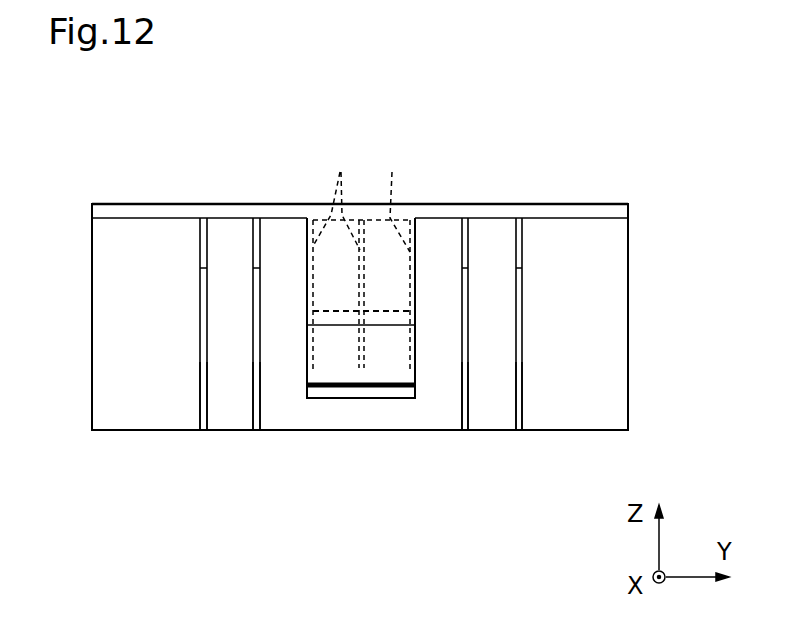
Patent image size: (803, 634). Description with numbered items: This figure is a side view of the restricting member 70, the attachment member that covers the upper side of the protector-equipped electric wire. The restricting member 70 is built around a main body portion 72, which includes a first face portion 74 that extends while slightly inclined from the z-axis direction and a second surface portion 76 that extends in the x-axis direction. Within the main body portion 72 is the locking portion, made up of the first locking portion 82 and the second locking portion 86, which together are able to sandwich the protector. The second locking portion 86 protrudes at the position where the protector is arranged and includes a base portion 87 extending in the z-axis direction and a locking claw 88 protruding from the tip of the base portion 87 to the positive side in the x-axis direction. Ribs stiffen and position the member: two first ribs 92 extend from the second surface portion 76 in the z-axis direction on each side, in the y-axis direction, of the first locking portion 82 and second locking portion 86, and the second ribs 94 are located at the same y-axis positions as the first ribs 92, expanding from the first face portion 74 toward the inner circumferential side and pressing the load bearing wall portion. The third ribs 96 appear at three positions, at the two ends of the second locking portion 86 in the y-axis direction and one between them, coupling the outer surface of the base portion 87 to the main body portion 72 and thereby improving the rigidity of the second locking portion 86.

The restricting member 70 is at (165, 148).
The main body portion 72 is at (560, 210).
The first face portion 74 is at (618, 357).
The second surface portion 76 is at (620, 210).
The first locking portion 82 is at (393, 318).
The second locking portion 86 is at (384, 389).
The base portion 87 is at (385, 370).
The locking claw 88 is at (343, 393).
The first ribs 92 is at (204, 240).
The second ribs 94 is at (200, 362).
The third ribs 96 is at (361, 257).